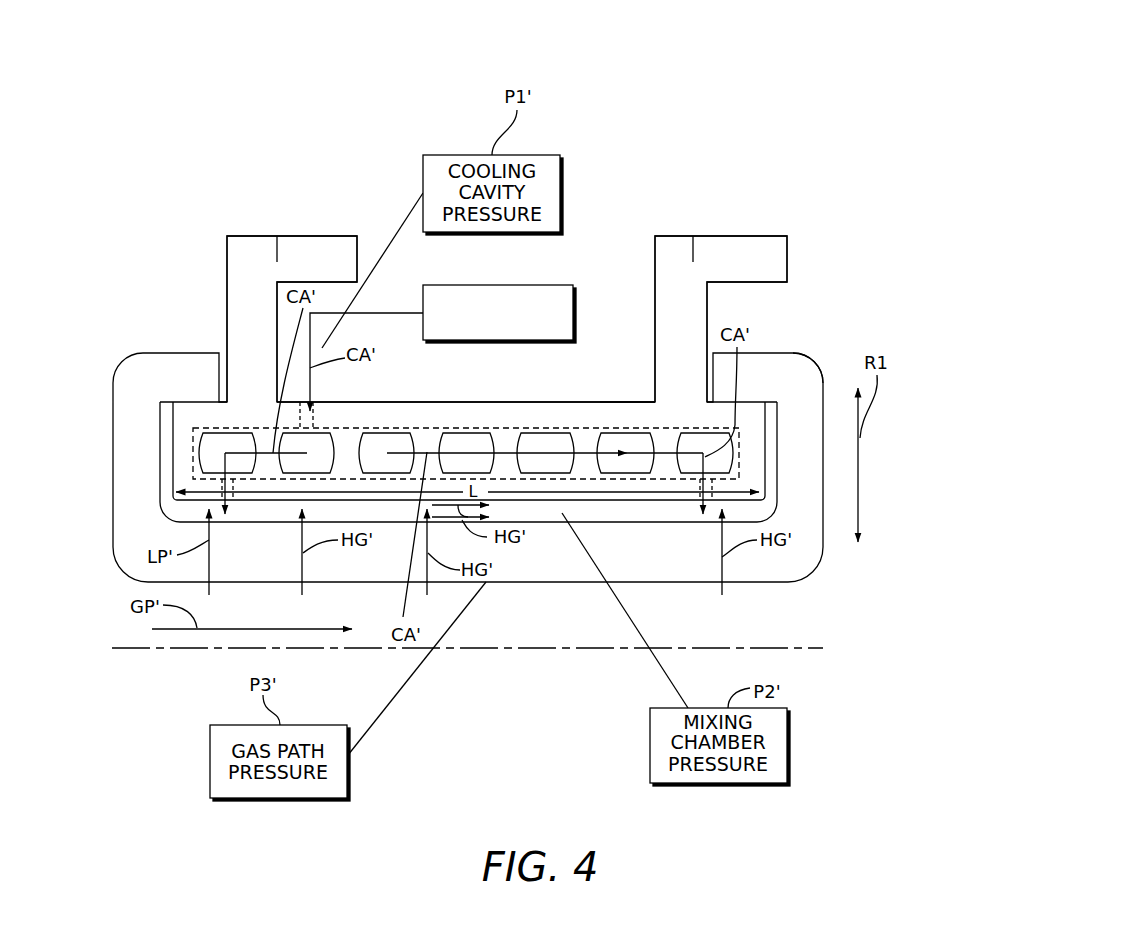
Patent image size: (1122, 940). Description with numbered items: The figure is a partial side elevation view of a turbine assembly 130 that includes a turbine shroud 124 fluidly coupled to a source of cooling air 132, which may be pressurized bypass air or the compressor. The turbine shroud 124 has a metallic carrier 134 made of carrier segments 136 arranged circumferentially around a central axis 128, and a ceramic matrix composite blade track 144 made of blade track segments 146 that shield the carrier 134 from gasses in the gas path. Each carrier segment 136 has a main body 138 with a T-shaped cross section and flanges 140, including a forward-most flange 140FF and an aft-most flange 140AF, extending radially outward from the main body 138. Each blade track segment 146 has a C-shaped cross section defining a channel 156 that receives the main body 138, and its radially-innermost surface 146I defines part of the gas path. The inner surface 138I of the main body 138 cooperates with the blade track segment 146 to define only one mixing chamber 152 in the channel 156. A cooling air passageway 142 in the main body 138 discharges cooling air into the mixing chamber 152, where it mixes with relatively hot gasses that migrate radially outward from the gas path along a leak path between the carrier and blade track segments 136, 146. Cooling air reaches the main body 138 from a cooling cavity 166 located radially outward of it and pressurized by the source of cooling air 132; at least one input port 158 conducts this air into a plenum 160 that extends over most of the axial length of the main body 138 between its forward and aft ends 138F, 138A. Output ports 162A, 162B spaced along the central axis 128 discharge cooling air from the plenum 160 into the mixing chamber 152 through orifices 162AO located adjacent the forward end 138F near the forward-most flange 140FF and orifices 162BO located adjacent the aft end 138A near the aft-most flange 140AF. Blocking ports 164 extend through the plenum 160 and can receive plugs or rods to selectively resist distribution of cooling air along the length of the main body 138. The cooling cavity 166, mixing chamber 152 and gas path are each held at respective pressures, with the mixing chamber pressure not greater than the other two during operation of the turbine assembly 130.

The turbine shroud 124 is at (793, 296).
The central axis 128 is at (205, 650).
The turbine assembly 130 is at (774, 71).
The source of cooling air 132 is at (480, 285).
The carrier 134 is at (640, 310).
The carrier segment 136 is at (623, 396).
The main body 138 is at (453, 402).
The aft end 138A is at (752, 422).
The forward end 138F is at (178, 446).
The inner surface 138I is at (538, 500).
The flanges 140 is at (300, 162).
The forward-most flange 140FF is at (277, 261).
The aft-most flange 140AF is at (693, 261).
The cooling air passageway 142 is at (263, 419).
The blade track 144 is at (837, 302).
The blade track segment 146 is at (826, 356).
The radially-innermost surface 146I is at (515, 582).
The mixing chamber 152 is at (393, 513).
The channel 156 is at (196, 515).
The input port 158 is at (318, 412).
The plenum 160 is at (555, 427).
The output port 162A is at (234, 496).
The orifice 162AO is at (237, 506).
The output port 162B is at (692, 493).
The orifice 162BO is at (698, 506).
The blocking ports 164 is at (392, 434).
The cooling cavity 166 is at (580, 347).